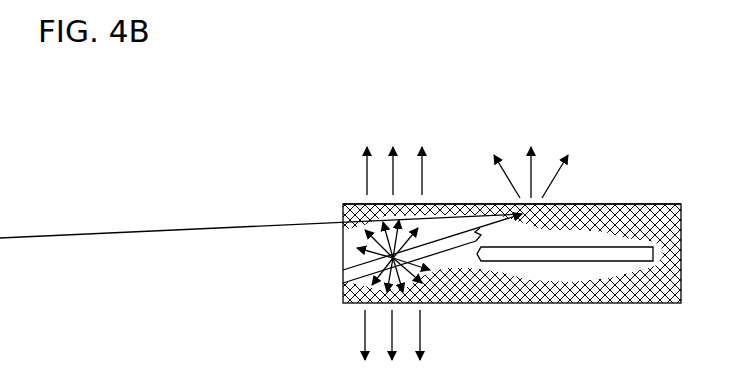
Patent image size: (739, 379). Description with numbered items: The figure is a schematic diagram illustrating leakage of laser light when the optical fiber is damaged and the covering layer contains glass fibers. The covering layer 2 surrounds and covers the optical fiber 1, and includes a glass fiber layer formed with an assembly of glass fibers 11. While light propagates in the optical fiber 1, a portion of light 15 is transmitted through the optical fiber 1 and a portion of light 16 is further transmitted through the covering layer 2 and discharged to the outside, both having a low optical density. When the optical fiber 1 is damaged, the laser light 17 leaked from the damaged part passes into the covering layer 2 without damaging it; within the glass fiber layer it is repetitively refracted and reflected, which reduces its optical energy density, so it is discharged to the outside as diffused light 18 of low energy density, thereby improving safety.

The optical fiber 1 is at (456, 250).
The covering layer 2 is at (667, 304).
The glass fibers 11 is at (634, 205).
The portion of light 15 is at (352, 238).
The portion of light 16 is at (366, 172).
The laser light 17 is at (484, 206).
The light 18 is at (510, 170).